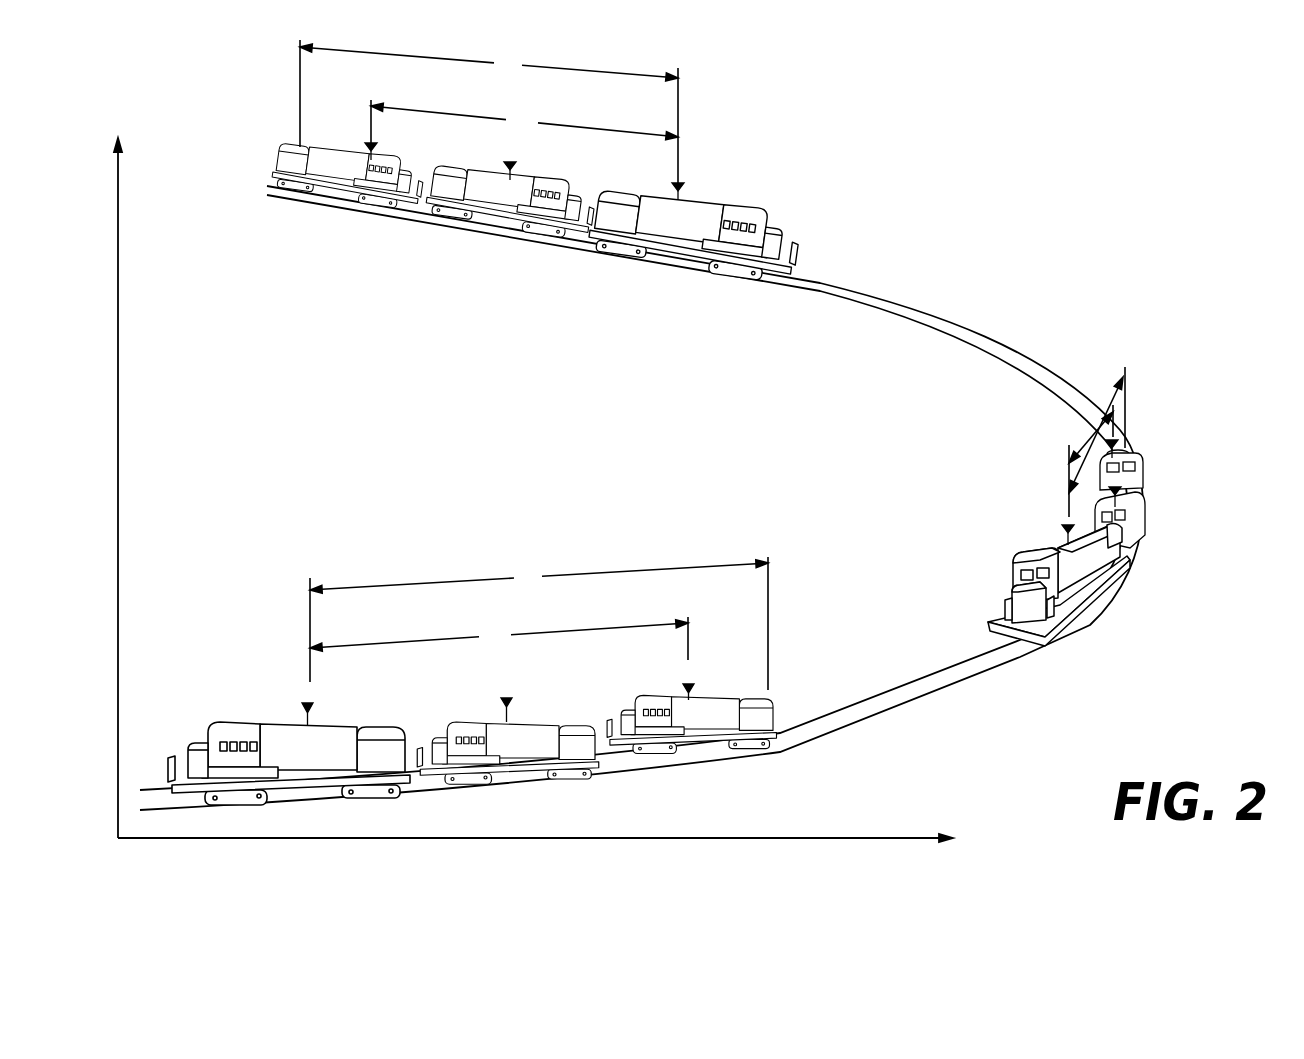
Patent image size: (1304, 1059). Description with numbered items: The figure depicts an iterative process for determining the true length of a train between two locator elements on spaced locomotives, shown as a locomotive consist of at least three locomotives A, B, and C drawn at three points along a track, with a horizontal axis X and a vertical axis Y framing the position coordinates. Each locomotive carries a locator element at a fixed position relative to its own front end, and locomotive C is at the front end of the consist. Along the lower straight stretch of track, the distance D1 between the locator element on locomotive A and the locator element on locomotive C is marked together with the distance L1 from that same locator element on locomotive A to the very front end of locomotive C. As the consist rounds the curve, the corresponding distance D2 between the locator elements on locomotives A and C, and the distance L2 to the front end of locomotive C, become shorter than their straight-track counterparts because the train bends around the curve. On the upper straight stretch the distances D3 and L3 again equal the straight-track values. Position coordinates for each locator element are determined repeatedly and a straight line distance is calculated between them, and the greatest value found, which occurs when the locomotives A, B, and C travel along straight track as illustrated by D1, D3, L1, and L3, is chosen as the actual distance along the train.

The locomotive A is at (677, 242).
The locomotive B is at (502, 210).
The locomotive C is at (341, 185).
The distance L1 is at (539, 623).
The distance D1 is at (499, 638).
The distance L2 is at (1108, 397).
The distance D2 is at (1087, 462).
The distance L3 is at (489, 111).
The distance D3 is at (524, 121).
The X axis X is at (535, 857).
The Y axis Y is at (107, 488).